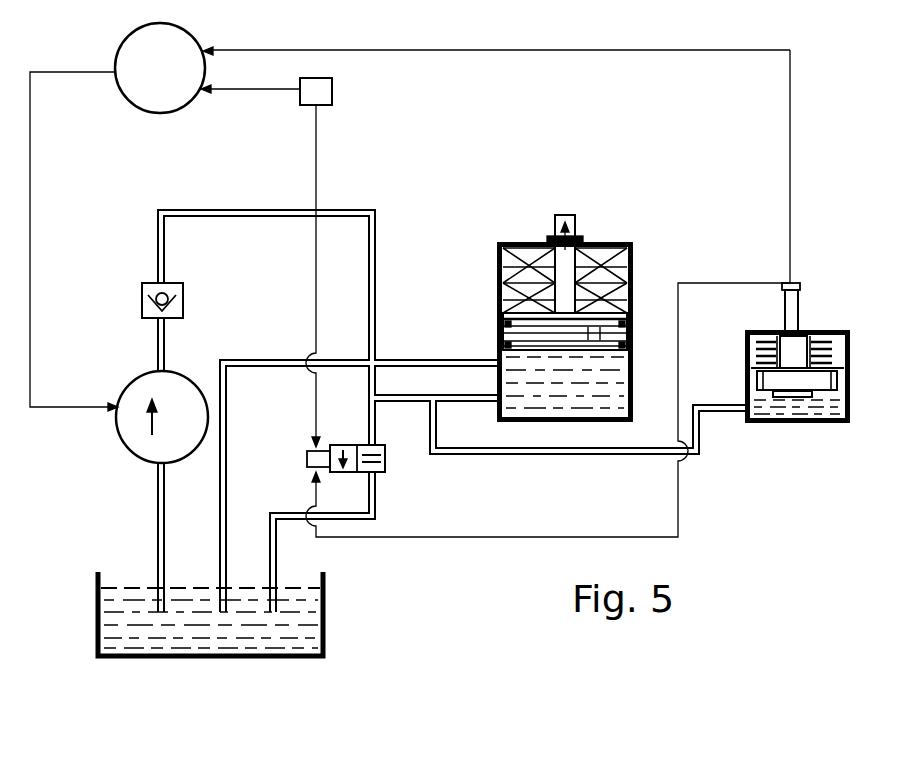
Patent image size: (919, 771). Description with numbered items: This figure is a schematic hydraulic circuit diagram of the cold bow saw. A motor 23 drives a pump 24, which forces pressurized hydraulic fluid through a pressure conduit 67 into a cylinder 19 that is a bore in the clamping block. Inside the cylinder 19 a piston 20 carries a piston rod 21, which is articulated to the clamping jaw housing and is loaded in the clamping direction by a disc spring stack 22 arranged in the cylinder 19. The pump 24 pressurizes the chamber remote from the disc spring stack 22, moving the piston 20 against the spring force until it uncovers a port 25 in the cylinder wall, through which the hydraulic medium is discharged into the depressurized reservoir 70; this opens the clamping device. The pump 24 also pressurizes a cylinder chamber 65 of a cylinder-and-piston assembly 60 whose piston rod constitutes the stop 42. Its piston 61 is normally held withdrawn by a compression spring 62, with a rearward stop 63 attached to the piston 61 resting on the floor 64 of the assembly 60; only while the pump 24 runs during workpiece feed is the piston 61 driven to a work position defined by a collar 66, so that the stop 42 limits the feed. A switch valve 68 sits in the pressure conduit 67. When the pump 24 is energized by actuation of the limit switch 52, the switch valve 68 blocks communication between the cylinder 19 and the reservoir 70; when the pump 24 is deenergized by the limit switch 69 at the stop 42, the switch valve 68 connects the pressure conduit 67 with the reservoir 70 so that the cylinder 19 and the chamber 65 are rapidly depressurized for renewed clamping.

The cylinder 19 is at (628, 364).
The piston 20 is at (498, 318).
The piston rod 21 is at (574, 216).
The disc spring stack 22 is at (604, 247).
The motor 23 is at (128, 52).
The pump 24 is at (118, 418).
The port 25 is at (498, 349).
The stop 42 is at (800, 309).
The limit switch 52 is at (333, 90).
The cylinder-and-piston assembly 60 is at (905, 356).
The piston 61 is at (840, 381).
The compression spring 62 is at (752, 346).
The rearward stop 63 is at (808, 398).
The floor 64 is at (783, 422).
The cylinder chamber 65 is at (763, 418).
The collar 66 is at (793, 347).
The pressure conduit 67 is at (234, 210).
The switch valve 68 is at (385, 472).
The limit switch 69 is at (800, 289).
The reservoir 70 is at (227, 640).